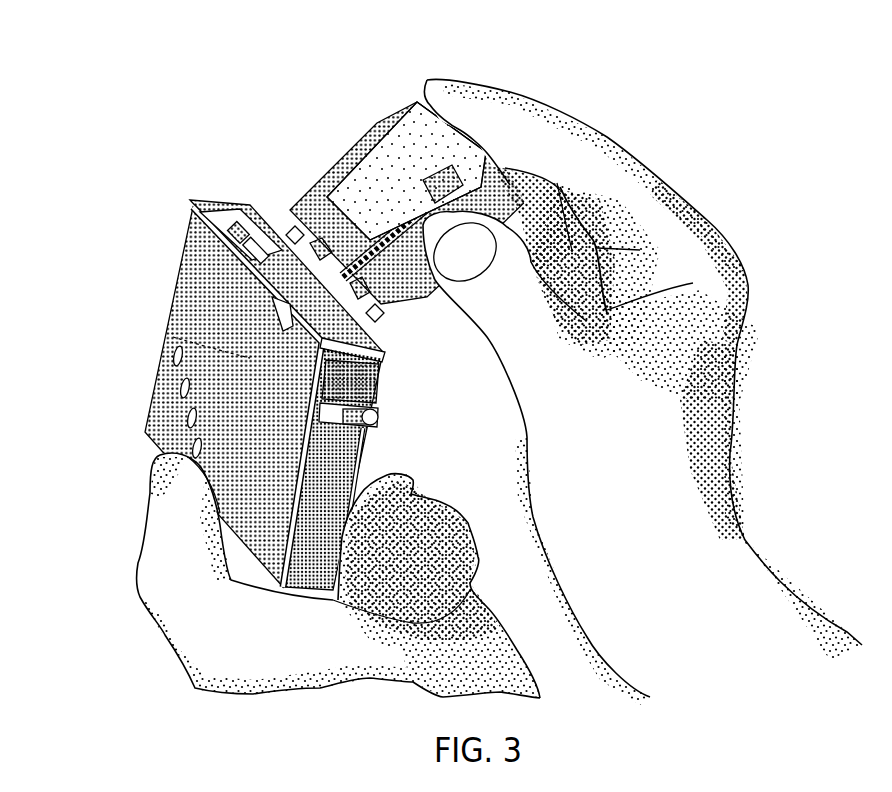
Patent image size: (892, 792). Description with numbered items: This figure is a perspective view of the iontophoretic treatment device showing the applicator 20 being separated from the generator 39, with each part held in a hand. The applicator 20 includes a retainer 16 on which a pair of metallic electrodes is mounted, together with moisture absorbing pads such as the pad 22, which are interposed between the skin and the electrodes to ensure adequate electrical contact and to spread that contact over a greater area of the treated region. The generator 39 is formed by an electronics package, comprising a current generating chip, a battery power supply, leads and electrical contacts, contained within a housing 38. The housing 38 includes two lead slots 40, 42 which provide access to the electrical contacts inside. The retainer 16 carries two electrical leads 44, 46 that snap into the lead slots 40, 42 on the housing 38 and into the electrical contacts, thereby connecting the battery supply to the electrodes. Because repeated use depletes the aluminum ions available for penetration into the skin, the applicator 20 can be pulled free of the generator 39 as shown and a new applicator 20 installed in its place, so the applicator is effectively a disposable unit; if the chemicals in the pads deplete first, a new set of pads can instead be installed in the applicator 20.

The retainer 16 is at (333, 166).
The applicator 20 is at (380, 208).
The moisture absorbing pad 22 is at (410, 133).
The housing 38 is at (171, 300).
The generator 39 is at (224, 395).
The lead slot 40 is at (250, 282).
The lead slot 42 is at (381, 351).
The electrical lead 44 is at (384, 322).
The electrical lead 46 is at (287, 224).